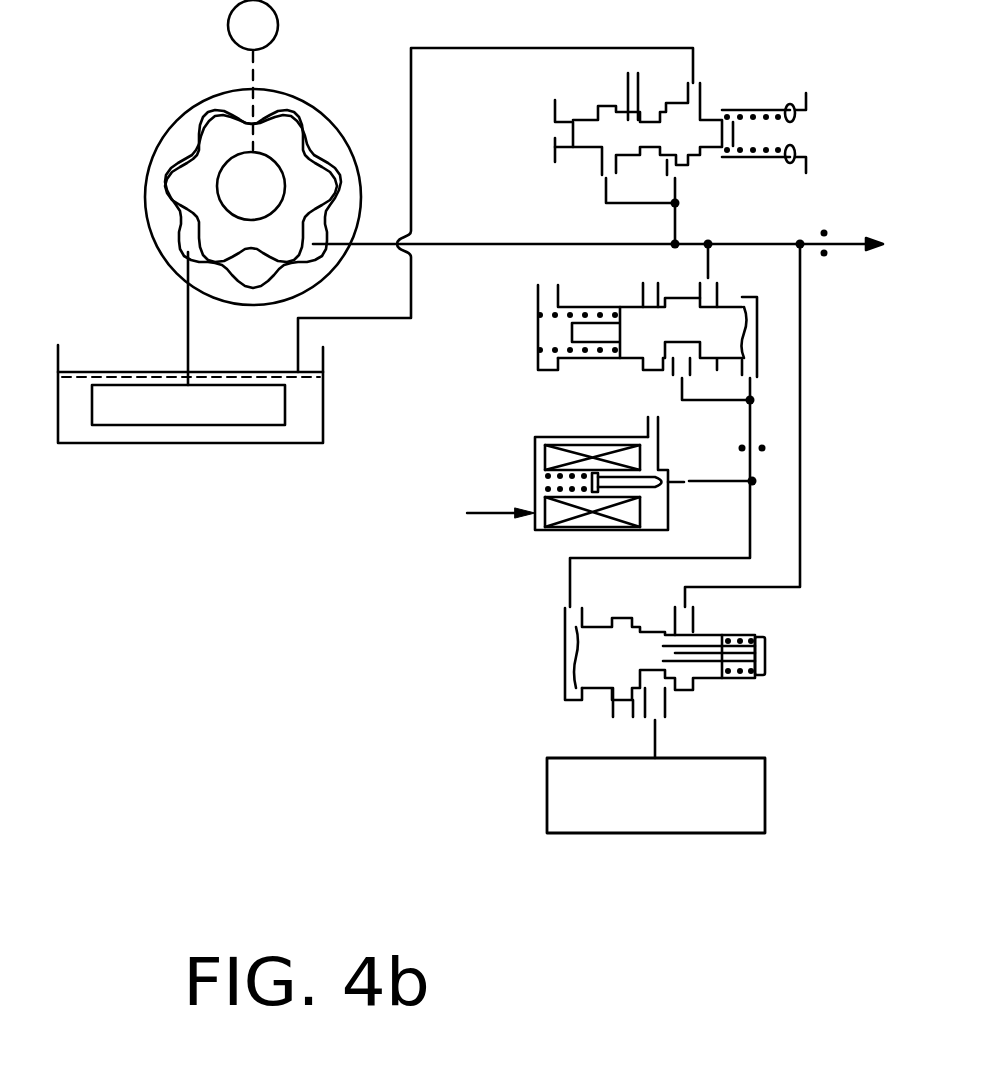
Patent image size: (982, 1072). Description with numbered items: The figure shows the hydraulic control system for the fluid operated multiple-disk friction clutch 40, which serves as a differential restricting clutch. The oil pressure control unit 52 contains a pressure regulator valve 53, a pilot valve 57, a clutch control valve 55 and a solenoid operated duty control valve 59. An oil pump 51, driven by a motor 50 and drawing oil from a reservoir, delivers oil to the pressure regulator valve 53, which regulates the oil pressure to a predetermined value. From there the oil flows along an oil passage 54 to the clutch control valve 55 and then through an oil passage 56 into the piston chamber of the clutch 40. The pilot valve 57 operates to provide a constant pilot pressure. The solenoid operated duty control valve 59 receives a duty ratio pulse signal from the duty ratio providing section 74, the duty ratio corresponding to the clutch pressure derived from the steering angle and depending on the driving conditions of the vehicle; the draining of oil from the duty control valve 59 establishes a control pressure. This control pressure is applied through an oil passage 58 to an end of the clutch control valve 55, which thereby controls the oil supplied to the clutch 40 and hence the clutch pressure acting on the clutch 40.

The clutch 40 is at (547, 771).
The motor 50 is at (228, 26).
The oil pump 51 is at (177, 116).
The oil pressure control unit 52 is at (826, 464).
The pressure regulator valve 53 is at (753, 110).
The oil passage 54 is at (770, 243).
The clutch control valve 55 is at (737, 678).
The oil passage 56 is at (657, 740).
The pilot valve 57 is at (538, 330).
The oil passage 58 is at (753, 532).
The solenoid operated duty control valve 59 is at (583, 437).
The duty ratio providing section 74 is at (484, 513).